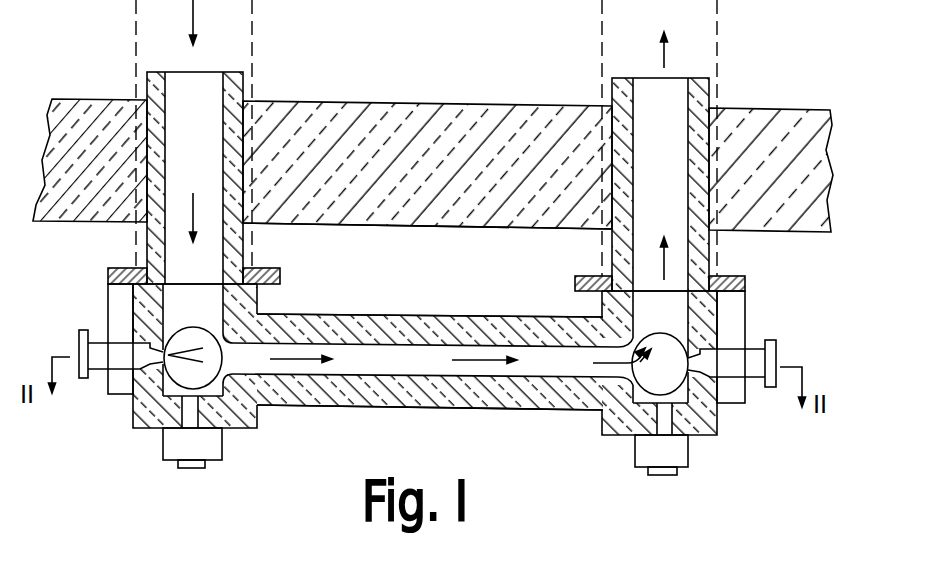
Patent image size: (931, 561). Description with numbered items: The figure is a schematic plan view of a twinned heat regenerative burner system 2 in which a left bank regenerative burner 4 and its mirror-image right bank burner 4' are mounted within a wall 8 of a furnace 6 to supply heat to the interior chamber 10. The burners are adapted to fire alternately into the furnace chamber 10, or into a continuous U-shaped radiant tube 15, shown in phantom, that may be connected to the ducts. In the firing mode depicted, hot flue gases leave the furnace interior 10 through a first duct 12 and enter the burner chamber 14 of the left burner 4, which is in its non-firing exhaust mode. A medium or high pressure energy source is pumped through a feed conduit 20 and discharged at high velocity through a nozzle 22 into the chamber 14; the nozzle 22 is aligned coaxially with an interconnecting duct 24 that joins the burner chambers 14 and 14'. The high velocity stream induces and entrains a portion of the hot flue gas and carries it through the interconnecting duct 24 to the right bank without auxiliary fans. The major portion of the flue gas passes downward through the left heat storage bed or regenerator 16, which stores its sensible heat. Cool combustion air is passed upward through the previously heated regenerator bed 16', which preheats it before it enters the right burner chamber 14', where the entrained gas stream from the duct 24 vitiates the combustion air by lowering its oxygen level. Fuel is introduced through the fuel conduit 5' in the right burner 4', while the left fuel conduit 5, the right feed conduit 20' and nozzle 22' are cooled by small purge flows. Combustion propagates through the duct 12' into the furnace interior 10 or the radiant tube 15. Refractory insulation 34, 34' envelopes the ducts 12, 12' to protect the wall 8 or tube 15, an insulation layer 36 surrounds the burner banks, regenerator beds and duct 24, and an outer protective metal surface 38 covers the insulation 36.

The fluid flow apparatus / conduit assembly 2 is at (587, 422).
The regenerative burner 4 is at (172, 378).
The right bank burner 4' is at (690, 372).
The fuel conduit 5 is at (209, 452).
The fuel conduit 5' is at (684, 455).
The furnace 6 is at (443, 232).
The wall 8 is at (494, 166).
The interior chamber 10 is at (447, 50).
The first duct 12 is at (162, 178).
The duct 12' is at (660, 184).
The burner chamber 14 is at (166, 277).
The burner chamber 14' is at (698, 277).
The radiant tube 15 is at (254, 46).
The heat storage bed or regenerator 16 is at (148, 381).
The regenerator bed 16' is at (732, 336).
The feed conduit 20 is at (58, 349).
The feed conduit 20' is at (811, 363).
The nozzle 22 is at (93, 339).
The nozzle 22' is at (770, 347).
The interconnecting duct 24 is at (380, 376).
The refractory insulation 34 is at (226, 174).
The refractory insulation 34' is at (702, 182).
The insulation layer 36 is at (463, 333).
The outer protective metal surface 38 is at (532, 315).